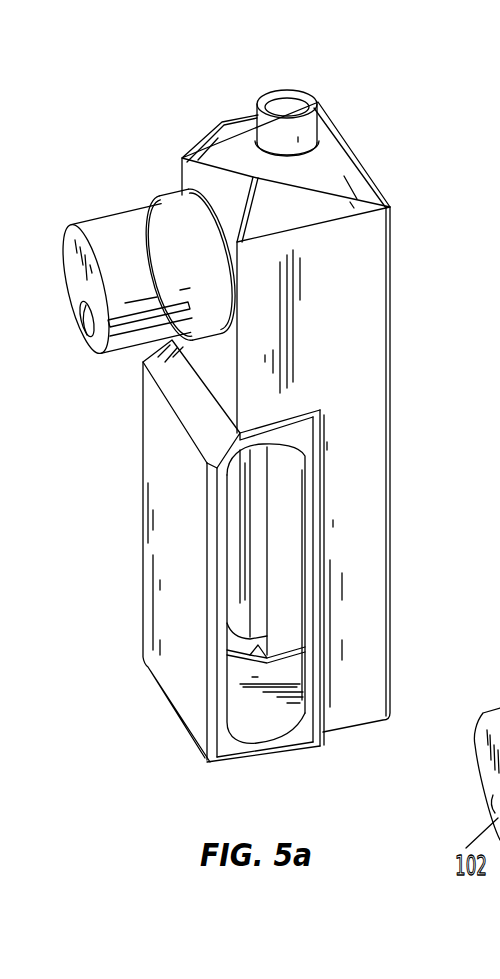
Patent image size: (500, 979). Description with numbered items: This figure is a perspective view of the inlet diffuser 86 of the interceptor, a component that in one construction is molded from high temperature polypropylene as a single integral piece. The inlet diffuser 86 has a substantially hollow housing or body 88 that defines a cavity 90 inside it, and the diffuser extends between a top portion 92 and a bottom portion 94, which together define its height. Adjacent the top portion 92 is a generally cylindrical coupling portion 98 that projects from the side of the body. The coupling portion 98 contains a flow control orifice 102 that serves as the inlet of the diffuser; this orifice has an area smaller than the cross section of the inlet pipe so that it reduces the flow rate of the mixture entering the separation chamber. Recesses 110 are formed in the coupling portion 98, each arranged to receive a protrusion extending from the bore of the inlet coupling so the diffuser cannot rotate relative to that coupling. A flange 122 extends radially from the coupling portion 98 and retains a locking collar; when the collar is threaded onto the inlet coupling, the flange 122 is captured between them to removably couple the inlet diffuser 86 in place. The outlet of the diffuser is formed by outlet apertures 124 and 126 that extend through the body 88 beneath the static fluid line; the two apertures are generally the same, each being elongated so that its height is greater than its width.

The inlet diffuser 86 is at (434, 80).
The housing or body 88 is at (392, 338).
The cavity 90 is at (286, 493).
The top portion 92 is at (363, 163).
The bottom portion 94 is at (393, 688).
The coupling portion 98 is at (112, 238).
The flow control orifice 102 is at (86, 331).
The recesses 110 is at (121, 323).
The flange 122 is at (167, 200).
The outlet aperture 124 is at (281, 738).
The outlet aperture 126 is at (230, 629).